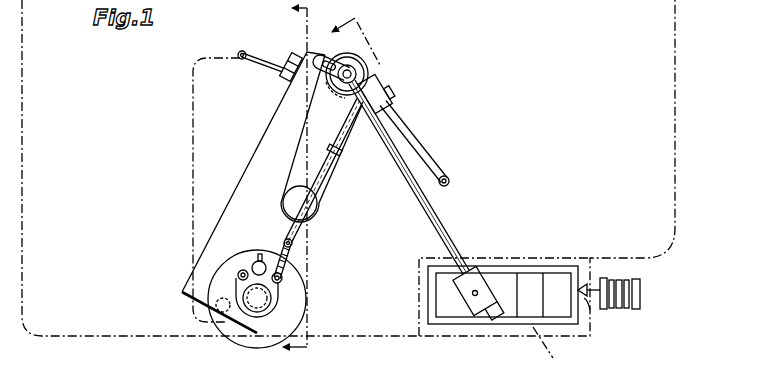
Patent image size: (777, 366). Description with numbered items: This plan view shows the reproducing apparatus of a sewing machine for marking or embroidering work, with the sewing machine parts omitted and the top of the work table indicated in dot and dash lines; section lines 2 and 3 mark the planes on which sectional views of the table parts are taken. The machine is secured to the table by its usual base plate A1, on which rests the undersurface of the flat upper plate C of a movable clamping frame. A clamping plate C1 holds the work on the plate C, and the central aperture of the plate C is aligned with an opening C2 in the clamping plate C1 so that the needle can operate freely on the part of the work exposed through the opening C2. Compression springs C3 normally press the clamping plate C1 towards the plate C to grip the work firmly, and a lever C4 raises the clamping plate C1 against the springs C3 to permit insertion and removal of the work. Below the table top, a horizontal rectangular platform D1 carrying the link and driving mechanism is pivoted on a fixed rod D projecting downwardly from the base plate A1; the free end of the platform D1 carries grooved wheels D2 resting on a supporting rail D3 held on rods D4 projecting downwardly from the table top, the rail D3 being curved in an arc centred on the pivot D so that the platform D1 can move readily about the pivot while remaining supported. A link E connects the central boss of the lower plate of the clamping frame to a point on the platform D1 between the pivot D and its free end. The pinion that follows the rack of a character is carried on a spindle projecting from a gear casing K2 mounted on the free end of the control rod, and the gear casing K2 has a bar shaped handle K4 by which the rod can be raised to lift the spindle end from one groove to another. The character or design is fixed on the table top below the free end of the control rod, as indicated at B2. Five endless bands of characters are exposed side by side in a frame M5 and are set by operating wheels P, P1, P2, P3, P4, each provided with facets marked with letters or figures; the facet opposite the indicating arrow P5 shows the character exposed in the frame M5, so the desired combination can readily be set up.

The base plate A1 is at (218, 122).
The position of the character or design B2 is at (452, 330).
The upper plate C is at (296, 304).
The clamping plate C1 is at (247, 262).
The opening C2 is at (272, 298).
The compression springs C3 is at (246, 262).
The lever C4 is at (261, 254).
The fixed rod D is at (216, 305).
The platform D1 is at (237, 193).
The grooved wheels D2 is at (283, 72).
The supporting rail D3 is at (411, 151).
The rods D4 is at (242, 51).
The link E is at (233, 276).
The gear casing K2 is at (470, 293).
The handle K4 is at (489, 327).
The frame M5 is at (490, 268).
The operating wheel P is at (602, 279).
The operating wheel P1 is at (611, 279).
The operating wheel P2 is at (619, 296).
The operating wheel P3 is at (628, 299).
The operating wheel P4 is at (638, 279).
The indicating arrow P5 is at (585, 300).
The section line 2 is at (303, 183).
The section line 3 is at (450, 186).